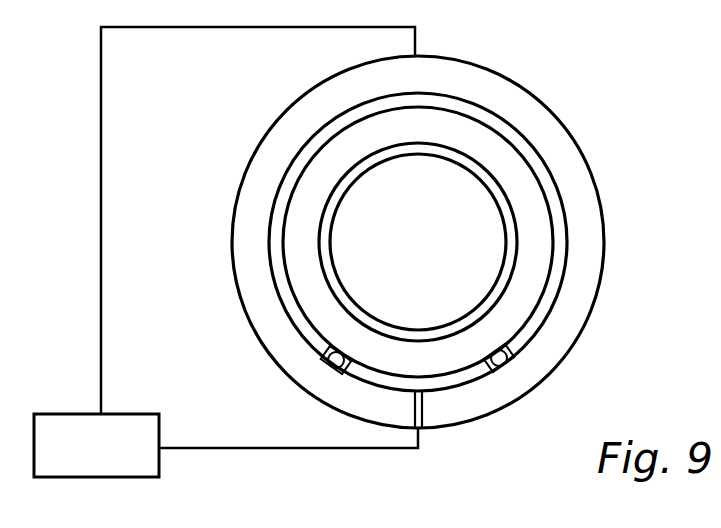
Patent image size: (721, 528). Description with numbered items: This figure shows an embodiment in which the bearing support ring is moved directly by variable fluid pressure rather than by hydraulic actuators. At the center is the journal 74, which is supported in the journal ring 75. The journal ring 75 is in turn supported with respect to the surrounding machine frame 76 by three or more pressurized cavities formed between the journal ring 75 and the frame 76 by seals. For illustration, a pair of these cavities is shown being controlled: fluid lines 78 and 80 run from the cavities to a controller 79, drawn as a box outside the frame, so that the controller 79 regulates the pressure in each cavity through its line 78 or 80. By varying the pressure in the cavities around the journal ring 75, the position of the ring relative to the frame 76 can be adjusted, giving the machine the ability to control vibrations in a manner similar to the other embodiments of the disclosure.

The journal 74 is at (458, 231).
The journal ring 75 is at (541, 286).
The machine frame 76 is at (585, 314).
The line 78 is at (422, 432).
The controller 79 is at (126, 420).
The line 80 is at (417, 52).